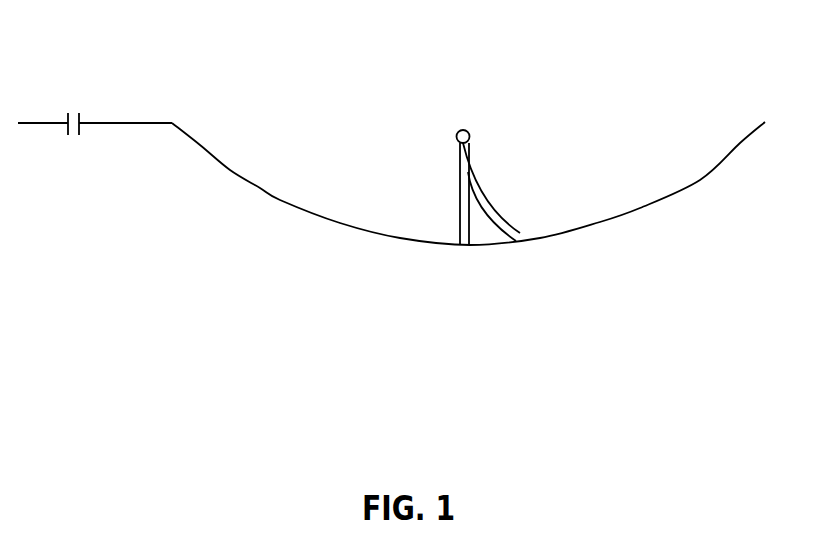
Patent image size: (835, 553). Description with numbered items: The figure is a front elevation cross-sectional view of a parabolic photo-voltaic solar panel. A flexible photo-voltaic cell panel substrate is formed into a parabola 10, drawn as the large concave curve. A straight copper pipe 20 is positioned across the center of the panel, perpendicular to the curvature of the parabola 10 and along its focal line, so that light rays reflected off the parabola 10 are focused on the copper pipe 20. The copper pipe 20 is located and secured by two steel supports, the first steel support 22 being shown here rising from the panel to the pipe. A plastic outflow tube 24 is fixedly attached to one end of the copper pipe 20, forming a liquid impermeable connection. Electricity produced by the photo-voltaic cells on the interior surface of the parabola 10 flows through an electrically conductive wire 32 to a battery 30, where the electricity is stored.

The parabola 10 is at (253, 198).
The copper pipe 20 is at (460, 130).
The steel support 22 is at (458, 235).
The plastic outflow tube 24 is at (521, 222).
The battery 30 is at (78, 113).
The electrically conductive wire 32 is at (127, 123).